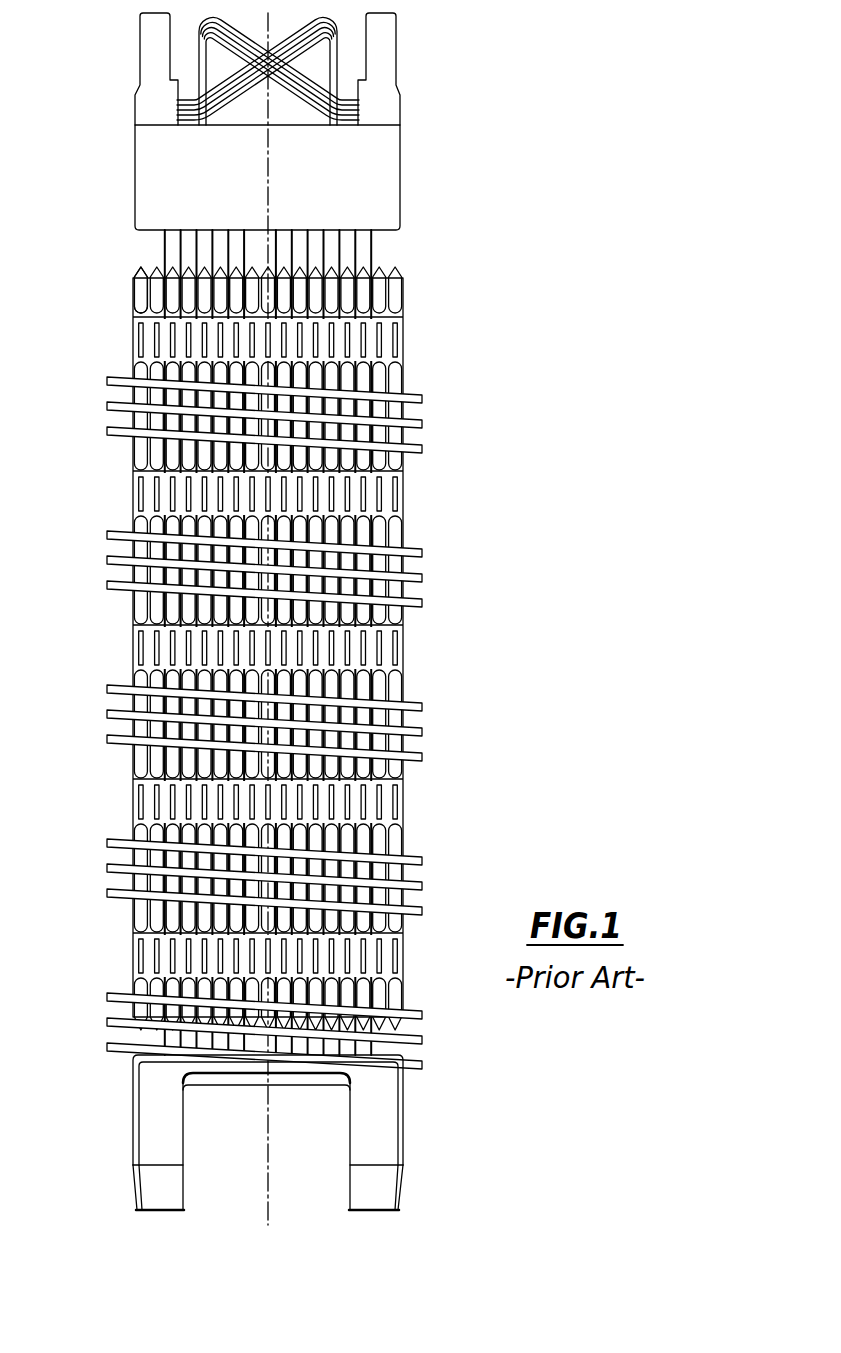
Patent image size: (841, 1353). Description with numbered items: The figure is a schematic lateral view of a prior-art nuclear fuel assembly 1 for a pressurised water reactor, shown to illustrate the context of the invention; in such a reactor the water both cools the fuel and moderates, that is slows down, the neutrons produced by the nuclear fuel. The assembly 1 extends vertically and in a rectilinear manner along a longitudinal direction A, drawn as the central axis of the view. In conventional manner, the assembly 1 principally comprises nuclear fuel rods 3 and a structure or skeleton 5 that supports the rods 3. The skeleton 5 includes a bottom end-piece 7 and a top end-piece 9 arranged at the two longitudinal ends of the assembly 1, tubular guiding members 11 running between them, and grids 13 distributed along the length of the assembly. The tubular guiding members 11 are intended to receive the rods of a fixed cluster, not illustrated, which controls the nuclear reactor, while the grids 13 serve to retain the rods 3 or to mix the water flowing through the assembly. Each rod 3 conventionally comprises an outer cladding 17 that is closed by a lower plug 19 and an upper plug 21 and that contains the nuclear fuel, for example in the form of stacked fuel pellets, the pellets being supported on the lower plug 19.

The nuclear fuel assembly 1 is at (492, 532).
The nuclear fuel rods 3 is at (385, 300).
The skeleton 5 is at (420, 211).
The bottom end-piece 7 is at (398, 1131).
The top end-piece 9 is at (387, 163).
The tubular guiding members 11 is at (191, 251).
The grids 13 is at (120, 958).
The outer cladding 17 is at (155, 421).
The lower plug 19 is at (135, 1023).
The upper plug 21 is at (140, 272).
The longitudinal direction A is at (265, 1213).